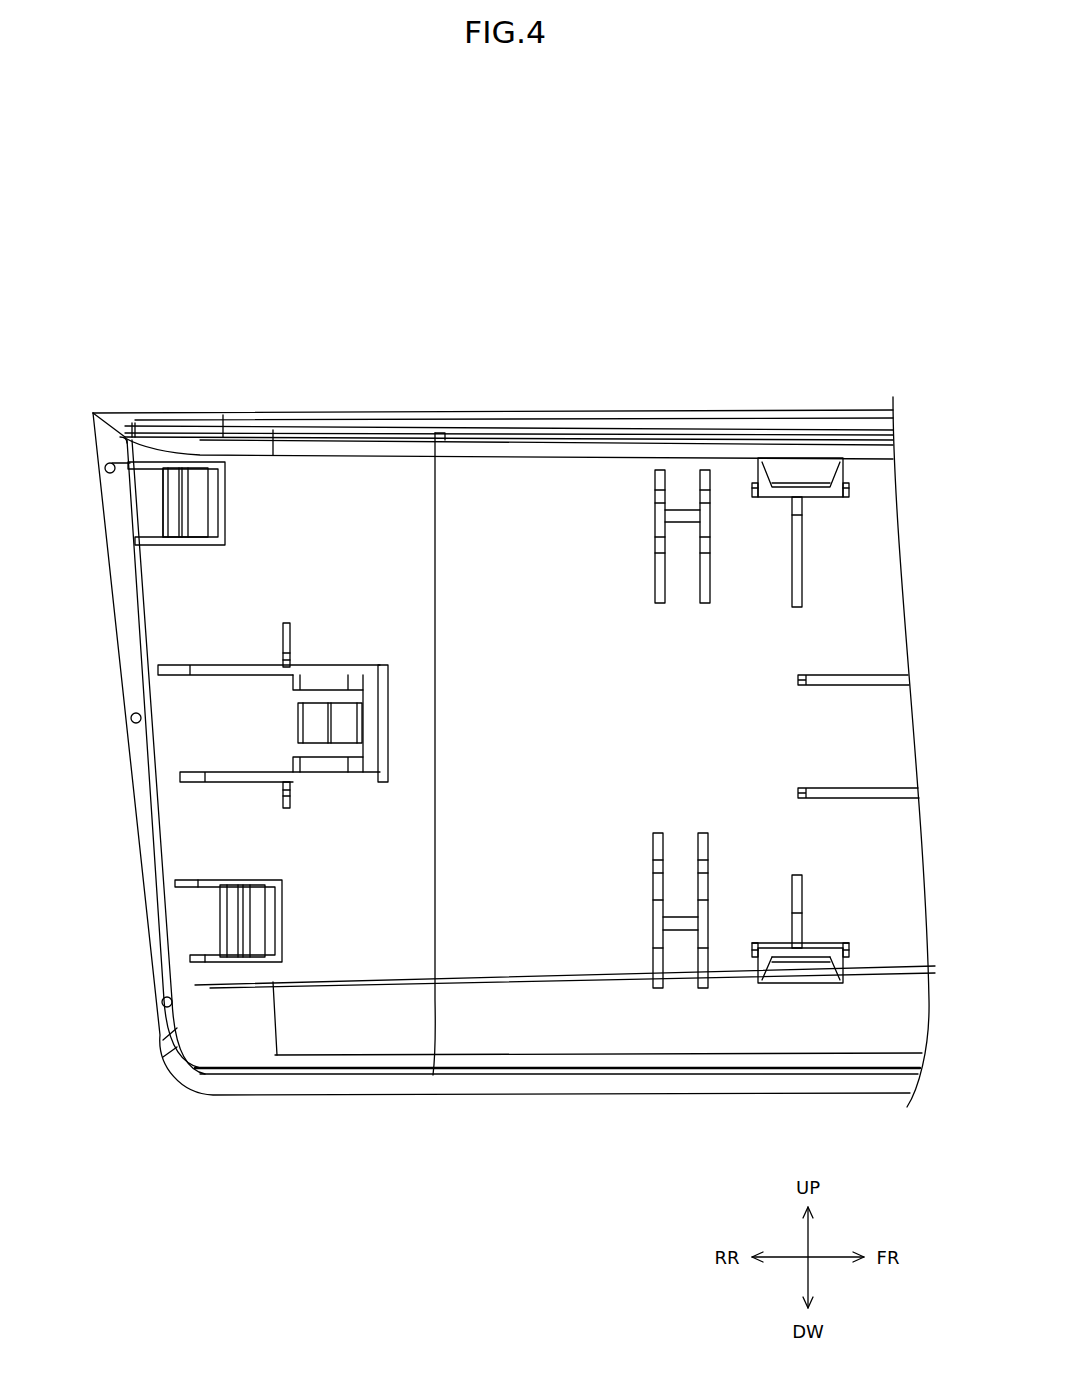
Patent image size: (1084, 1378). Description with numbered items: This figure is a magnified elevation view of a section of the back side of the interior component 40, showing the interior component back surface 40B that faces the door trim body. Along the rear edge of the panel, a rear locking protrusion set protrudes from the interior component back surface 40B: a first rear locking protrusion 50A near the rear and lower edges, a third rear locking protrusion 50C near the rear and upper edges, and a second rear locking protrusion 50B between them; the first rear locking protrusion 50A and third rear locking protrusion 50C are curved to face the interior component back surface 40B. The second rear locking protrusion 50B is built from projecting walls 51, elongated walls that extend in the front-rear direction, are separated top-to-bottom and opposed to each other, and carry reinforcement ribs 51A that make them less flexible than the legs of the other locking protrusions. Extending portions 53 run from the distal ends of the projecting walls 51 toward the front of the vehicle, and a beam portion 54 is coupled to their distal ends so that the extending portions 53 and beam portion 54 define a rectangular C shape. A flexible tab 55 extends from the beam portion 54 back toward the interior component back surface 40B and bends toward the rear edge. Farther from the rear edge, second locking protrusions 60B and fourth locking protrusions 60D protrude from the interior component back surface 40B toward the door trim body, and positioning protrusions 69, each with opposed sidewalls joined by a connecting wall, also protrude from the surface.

The interior component 40 is at (767, 264).
The interior component back surface 40B is at (560, 557).
The first rear locking protrusion 50A is at (252, 963).
The second rear locking protrusion 50B is at (318, 925).
The third rear locking protrusion 50C is at (205, 477).
The projecting walls 51 is at (240, 676).
The reinforcement ribs 51A is at (290, 632).
The extending portions 53 is at (343, 728).
The beam portion 54 is at (373, 711).
The flexible tab 55 is at (373, 712).
The second locking protrusions 60B is at (802, 972).
The fourth locking protrusions 60D is at (806, 468).
The positioning protrusions 69 is at (682, 512).